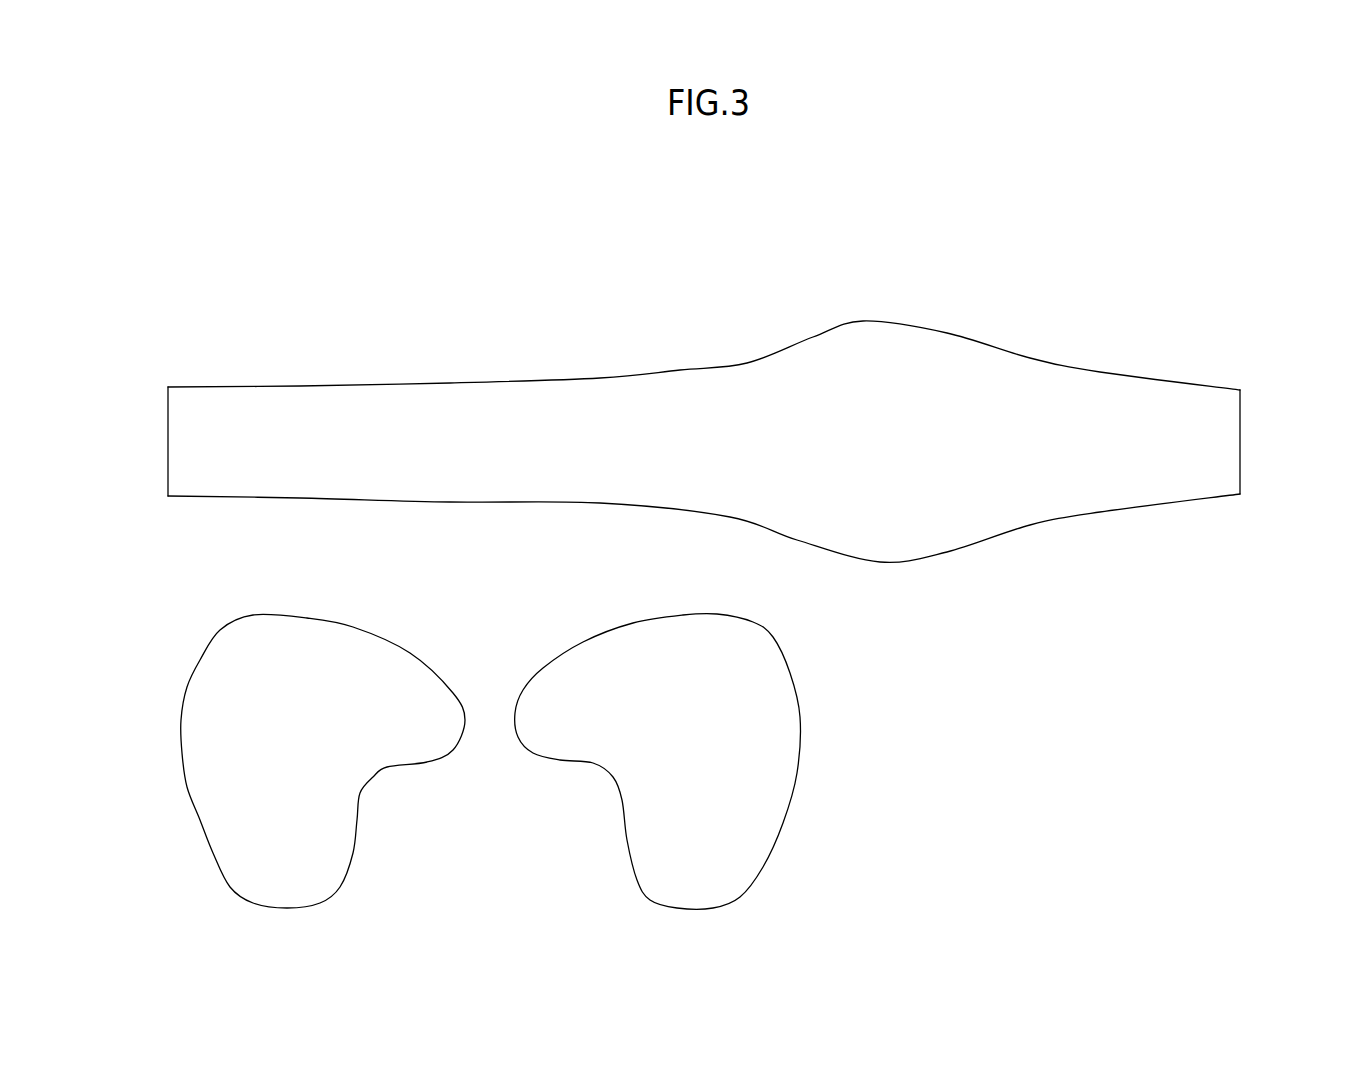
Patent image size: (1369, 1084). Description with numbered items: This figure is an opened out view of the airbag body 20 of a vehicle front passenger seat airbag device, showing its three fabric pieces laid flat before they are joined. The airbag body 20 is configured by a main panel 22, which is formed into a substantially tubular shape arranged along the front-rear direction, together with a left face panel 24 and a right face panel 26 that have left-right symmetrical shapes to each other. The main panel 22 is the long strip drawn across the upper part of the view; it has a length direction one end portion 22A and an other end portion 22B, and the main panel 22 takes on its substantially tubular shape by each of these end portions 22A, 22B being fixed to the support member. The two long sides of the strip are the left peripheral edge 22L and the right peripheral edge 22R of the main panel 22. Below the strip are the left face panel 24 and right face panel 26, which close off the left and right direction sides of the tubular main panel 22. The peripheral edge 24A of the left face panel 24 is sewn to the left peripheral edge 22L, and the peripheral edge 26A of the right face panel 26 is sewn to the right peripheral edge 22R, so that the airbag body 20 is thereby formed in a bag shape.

The airbag body 20 is at (338, 365).
The main panel 22 is at (862, 320).
The length direction one end portion 22A is at (168, 438).
The other end portion 22B is at (1240, 443).
The left peripheral edge 22L is at (593, 378).
The right peripheral edge 22R is at (638, 510).
The left face panel 24 is at (210, 633).
The peripheral edge 24A is at (300, 617).
The right face panel 26 is at (773, 630).
The peripheral edge 26A is at (607, 632).